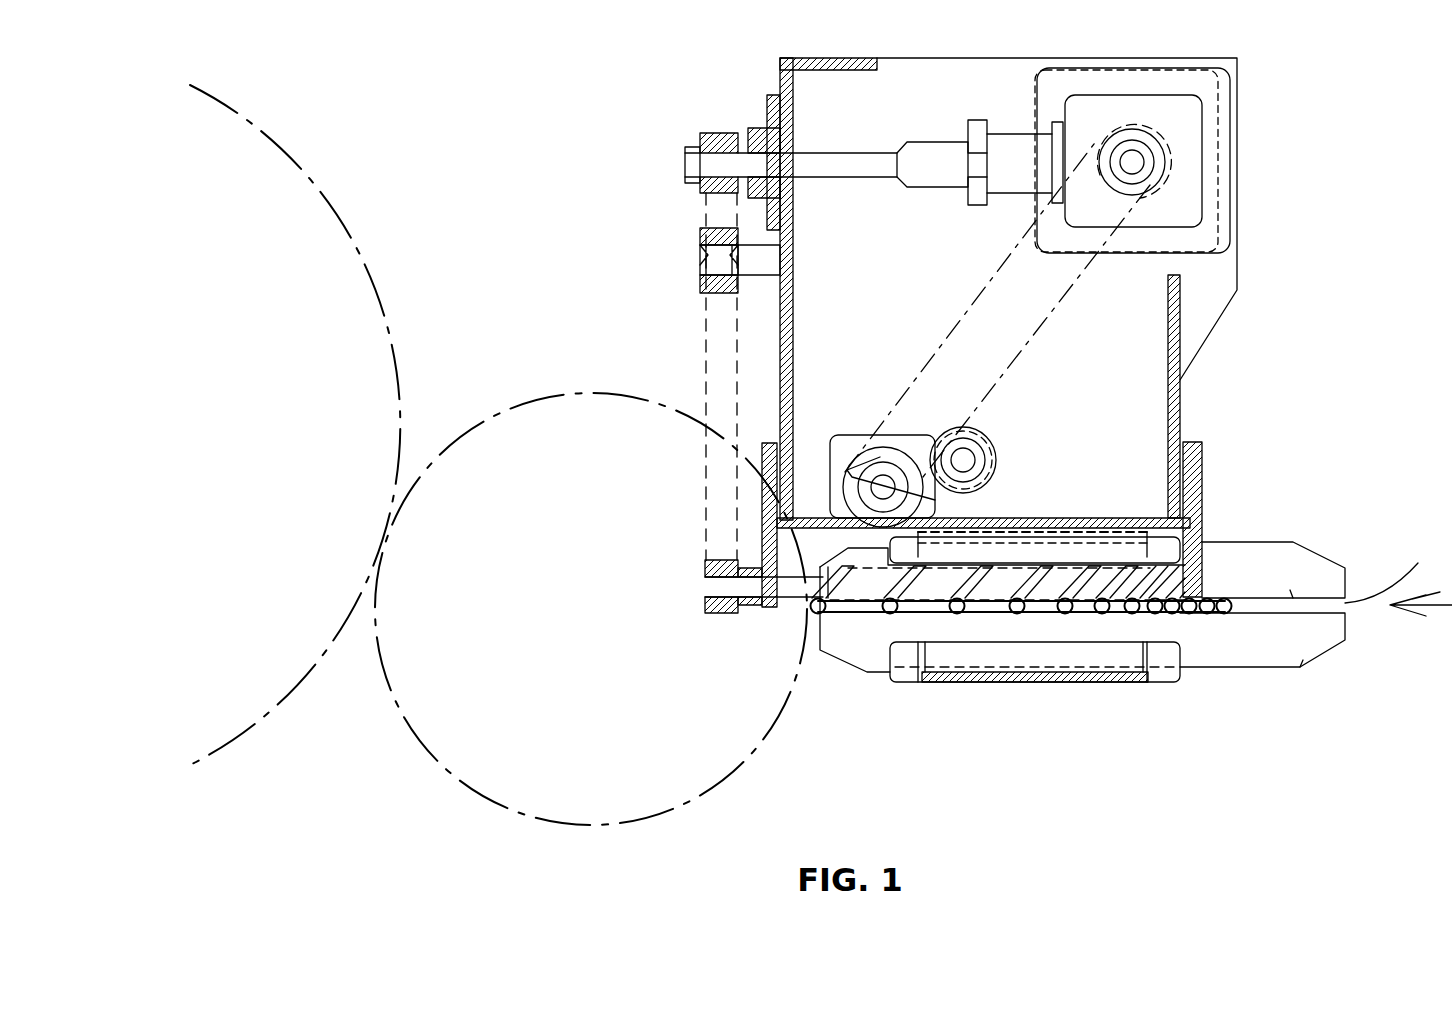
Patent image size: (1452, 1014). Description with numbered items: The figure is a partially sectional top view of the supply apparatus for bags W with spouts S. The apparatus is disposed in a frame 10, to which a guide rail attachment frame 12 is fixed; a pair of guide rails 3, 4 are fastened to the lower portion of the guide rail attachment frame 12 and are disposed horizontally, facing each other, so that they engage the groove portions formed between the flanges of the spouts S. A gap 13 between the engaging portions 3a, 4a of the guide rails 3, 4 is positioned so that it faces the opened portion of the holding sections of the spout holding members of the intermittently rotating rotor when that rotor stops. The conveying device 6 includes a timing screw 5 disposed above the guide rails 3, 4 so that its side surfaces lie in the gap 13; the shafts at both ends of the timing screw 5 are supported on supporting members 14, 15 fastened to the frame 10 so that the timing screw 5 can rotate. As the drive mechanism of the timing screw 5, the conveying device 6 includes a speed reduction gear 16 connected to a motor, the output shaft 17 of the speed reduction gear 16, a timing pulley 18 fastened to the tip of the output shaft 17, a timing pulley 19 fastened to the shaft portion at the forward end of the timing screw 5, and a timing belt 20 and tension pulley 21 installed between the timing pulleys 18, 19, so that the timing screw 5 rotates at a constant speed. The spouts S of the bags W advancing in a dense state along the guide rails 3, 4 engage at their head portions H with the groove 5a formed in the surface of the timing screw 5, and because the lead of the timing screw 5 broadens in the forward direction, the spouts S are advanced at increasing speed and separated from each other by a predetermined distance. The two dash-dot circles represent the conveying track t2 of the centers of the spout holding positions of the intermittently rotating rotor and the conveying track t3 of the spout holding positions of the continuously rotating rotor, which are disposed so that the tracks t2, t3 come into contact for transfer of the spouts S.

The frame 10 is at (895, 77).
The speed reduction gear 16 is at (1213, 142).
The output shaft 17 is at (843, 158).
The timing pulley 18 is at (700, 142).
The tension pulley 21 is at (700, 232).
The timing belt 20 is at (702, 330).
The supporting member 14 is at (760, 493).
The timing pulley 19 is at (703, 567).
The supporting member 15 is at (1202, 453).
The guide rail attachment frame 12 is at (1125, 680).
The conveying device 6 is at (858, 622).
The spout S is at (1068, 600).
The bag W is at (1225, 620).
The timing screw 5 is at (998, 592).
The groove 5a is at (990, 610).
The head portion H is at (982, 602).
The guide rail 3 is at (1263, 555).
The engaging portion 3a is at (1293, 597).
The guide rail 4 is at (1270, 657).
The engaging portion 4a is at (1305, 643).
The gap 13 is at (1398, 574).
The conveying track t2 is at (521, 385).
The conveying track t3 is at (395, 292).